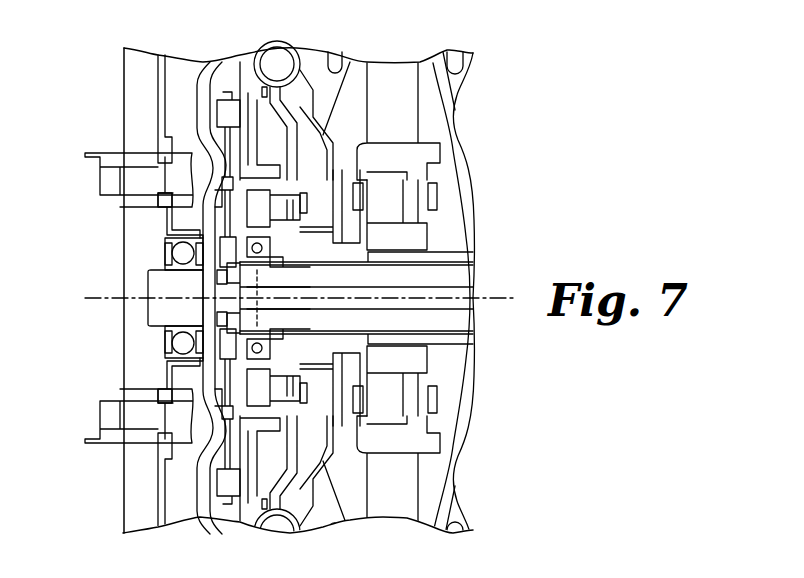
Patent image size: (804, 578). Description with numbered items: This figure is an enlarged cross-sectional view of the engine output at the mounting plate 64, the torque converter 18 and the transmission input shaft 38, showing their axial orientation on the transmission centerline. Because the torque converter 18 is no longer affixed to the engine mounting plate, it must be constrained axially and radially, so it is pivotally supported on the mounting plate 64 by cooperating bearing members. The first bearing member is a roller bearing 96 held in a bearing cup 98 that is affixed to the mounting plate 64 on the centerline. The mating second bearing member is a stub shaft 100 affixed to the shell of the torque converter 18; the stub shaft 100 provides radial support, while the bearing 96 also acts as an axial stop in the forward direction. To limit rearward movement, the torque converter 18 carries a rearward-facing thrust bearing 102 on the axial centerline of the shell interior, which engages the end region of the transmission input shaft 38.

The torque converter 18 is at (203, 458).
The transmission input shaft 38 is at (440, 277).
The mounting plate 64 is at (163, 105).
The roller bearing 96 is at (183, 252).
The bearing cup 98 is at (183, 233).
The stub shaft 100 is at (160, 308).
The thrust bearing 102 is at (218, 315).